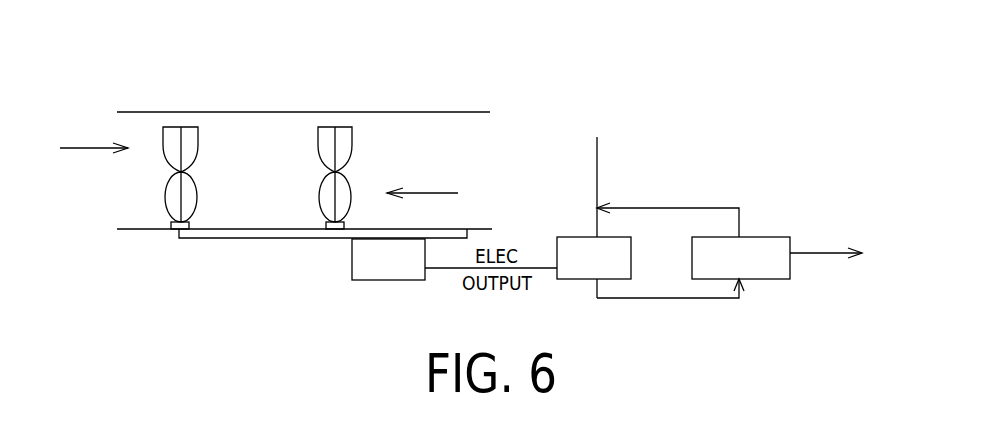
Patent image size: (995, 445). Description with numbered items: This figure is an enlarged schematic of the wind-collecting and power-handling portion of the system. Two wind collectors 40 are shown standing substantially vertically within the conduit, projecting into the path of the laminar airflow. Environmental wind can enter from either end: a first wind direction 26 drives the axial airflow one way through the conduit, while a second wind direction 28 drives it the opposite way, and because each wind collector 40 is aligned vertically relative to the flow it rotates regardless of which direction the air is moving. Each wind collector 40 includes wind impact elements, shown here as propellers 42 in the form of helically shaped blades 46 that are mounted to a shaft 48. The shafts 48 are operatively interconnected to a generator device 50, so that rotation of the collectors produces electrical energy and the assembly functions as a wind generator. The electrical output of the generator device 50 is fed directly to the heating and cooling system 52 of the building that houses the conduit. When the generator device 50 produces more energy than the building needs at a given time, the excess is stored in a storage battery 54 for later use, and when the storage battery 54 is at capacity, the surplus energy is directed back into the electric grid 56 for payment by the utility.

The first wind direction 26 is at (79, 148).
The second wind direction 28 is at (440, 193).
The wind collector 40 is at (268, 148).
The propeller 42 is at (168, 140).
The helically shaped blade 46 is at (355, 178).
The shaft 48 is at (335, 163).
The generator device 50 is at (377, 281).
The heating and cooling system 52 is at (581, 237).
The storage battery 54 is at (770, 281).
The electric grid 56 is at (846, 238).